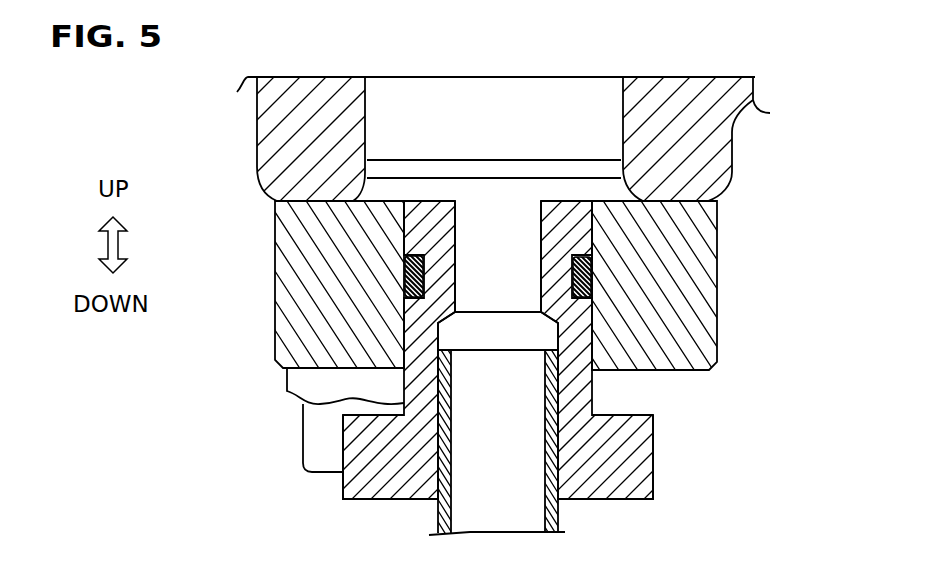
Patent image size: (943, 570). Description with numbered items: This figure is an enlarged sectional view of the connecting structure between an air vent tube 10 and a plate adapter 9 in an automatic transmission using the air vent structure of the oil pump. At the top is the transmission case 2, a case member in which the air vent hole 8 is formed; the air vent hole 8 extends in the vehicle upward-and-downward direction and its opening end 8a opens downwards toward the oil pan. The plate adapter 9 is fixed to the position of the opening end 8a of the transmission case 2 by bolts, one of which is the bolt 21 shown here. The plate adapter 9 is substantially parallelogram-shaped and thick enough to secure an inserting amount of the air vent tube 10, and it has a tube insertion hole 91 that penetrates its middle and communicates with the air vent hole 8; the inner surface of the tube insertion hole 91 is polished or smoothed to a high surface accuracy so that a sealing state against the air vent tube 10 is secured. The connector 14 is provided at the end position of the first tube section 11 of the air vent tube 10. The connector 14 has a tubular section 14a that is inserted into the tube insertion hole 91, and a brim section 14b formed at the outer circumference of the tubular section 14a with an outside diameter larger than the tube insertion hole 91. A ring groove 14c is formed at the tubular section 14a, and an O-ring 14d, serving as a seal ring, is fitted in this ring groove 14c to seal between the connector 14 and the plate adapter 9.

The transmission case 2 is at (703, 140).
The air vent hole 8 is at (366, 104).
The opening end 8a is at (493, 201).
The plate adapter 9 is at (646, 338).
The tube insertion hole 91 is at (588, 224).
The air vent tube 10 is at (559, 515).
The first tube section 11 is at (445, 518).
The connector 14 is at (653, 451).
The tubular section 14a is at (572, 344).
The brim section 14b is at (620, 474).
The ring groove 14c is at (412, 255).
The O-ring 14d is at (580, 280).
The bolt 21 is at (305, 428).